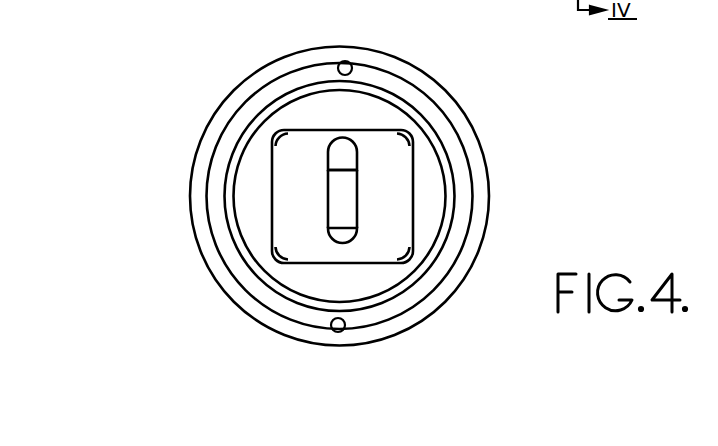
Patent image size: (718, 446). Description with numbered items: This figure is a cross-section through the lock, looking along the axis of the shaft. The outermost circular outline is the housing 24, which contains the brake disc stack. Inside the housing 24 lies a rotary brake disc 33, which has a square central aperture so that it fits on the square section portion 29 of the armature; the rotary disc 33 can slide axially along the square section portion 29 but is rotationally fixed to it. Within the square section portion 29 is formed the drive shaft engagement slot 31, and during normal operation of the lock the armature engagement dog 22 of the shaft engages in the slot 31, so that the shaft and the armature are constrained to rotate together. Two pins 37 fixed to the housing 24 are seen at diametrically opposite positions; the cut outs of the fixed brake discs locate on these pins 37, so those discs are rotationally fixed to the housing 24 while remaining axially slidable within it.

The housing 24 is at (452, 107).
The rotary brake discs 33 is at (430, 183).
The square section portion 29 is at (395, 225).
The armature engagement dog 22 is at (338, 213).
The drive shaft engagement slot 31 is at (357, 238).
The pins 37 is at (350, 62).